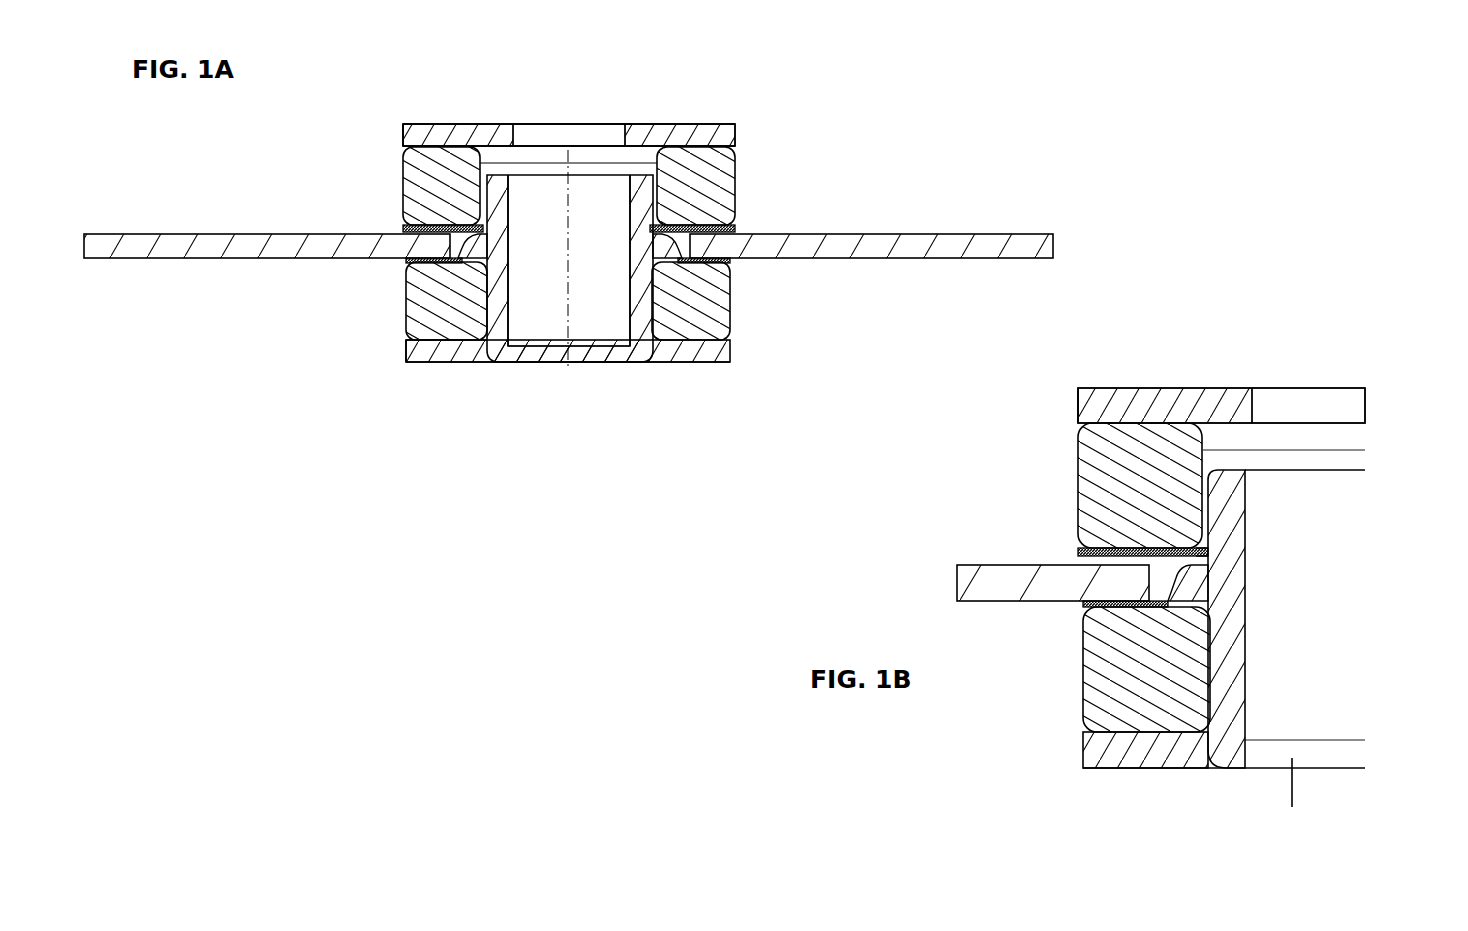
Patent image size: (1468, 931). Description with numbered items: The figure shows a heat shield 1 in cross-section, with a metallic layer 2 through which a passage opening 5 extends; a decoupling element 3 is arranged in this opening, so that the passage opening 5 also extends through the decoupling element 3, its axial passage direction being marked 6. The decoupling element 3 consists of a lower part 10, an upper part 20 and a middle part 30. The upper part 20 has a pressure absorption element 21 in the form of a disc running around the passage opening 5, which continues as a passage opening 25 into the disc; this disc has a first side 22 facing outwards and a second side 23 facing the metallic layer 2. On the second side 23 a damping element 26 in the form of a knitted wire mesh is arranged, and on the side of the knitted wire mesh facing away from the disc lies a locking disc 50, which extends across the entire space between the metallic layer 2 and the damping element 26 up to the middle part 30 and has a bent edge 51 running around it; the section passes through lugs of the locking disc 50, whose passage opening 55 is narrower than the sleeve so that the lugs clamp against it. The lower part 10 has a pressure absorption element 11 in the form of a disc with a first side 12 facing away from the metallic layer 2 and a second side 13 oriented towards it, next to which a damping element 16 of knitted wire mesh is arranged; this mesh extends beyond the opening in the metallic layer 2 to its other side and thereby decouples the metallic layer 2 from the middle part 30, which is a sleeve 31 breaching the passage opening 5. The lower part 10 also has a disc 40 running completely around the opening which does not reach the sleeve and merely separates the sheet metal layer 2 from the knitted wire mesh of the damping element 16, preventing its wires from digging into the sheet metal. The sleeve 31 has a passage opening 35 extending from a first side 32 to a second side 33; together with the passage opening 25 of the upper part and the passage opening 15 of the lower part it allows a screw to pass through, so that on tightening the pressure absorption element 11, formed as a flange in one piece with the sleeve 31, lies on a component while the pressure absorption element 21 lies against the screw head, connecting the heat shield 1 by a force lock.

In FIG. 1A, the heat shield 1 is at (952, 120).
In FIG. 1A, the metallic layer 2 is at (224, 242).
In FIG. 1B, the metallic layer 2 is at (985, 575).
In FIG. 1A, the decoupling element 3 is at (533, 126).
In FIG. 1B, the decoupling element 3 is at (1182, 365).
In FIG. 1A, the passage opening 5 is at (557, 267).
In FIG. 1B, the passage opening 5 is at (1299, 599).
In FIG. 1A, the passage direction 6 is at (567, 330).
In FIG. 1B, the passage direction 6 is at (1345, 618).
In FIG. 1A, the lower part 10 is at (502, 391).
In FIG. 1B, the lower part 10 is at (1164, 778).
In FIG. 1A, the pressure absorption element 11 is at (417, 348).
In FIG. 1B, the pressure absorption element 11 is at (1152, 752).
In FIG. 1A, the first side 12 is at (442, 362).
In FIG. 1A, the second side 13 is at (428, 340).
In FIG. 1A, the passage opening 15 is at (532, 352).
In FIG. 1B, the passage opening 15 is at (1294, 802).
In FIG. 1A, the damping element 16 is at (720, 298).
In FIG. 1B, the damping element 16 is at (1093, 683).
In FIG. 1A, the upper part 20 is at (412, 134).
In FIG. 1B, the upper part 20 is at (1142, 398).
In FIG. 1A, the pressure absorption element 21 is at (485, 128).
In FIG. 1B, the pressure absorption element 21 is at (1170, 395).
In FIG. 1A, the first side 22 is at (413, 130).
In FIG. 1A, the second side 23 is at (430, 147).
In FIG. 1A, the passage opening 25 is at (543, 128).
In FIG. 1B, the passage opening 25 is at (1255, 407).
In FIG. 1A, the damping element 26 is at (722, 182).
In FIG. 1B, the damping element 26 is at (1095, 478).
In FIG. 1A, the middle part 30 is at (570, 308).
In FIG. 1B, the middle part 30 is at (1238, 713).
In FIG. 1A, the sleeve 31 is at (637, 315).
In FIG. 1A, the first side 32 is at (497, 317).
In FIG. 1A, the second side 33 is at (498, 220).
In FIG. 1A, the passage opening 35 is at (617, 225).
In FIG. 1B, the passage opening 35 is at (1309, 654).
In FIG. 1A, the disc 40 is at (410, 259).
In FIG. 1B, the disc 40 is at (1083, 603).
In FIG. 1A, the locking disc 50 is at (733, 222).
In FIG. 1B, the locking disc 50 is at (1080, 548).
In FIG. 1B, the bent edge 51 is at (1210, 548).
In FIG. 1B, the passage opening 55 is at (1208, 540).